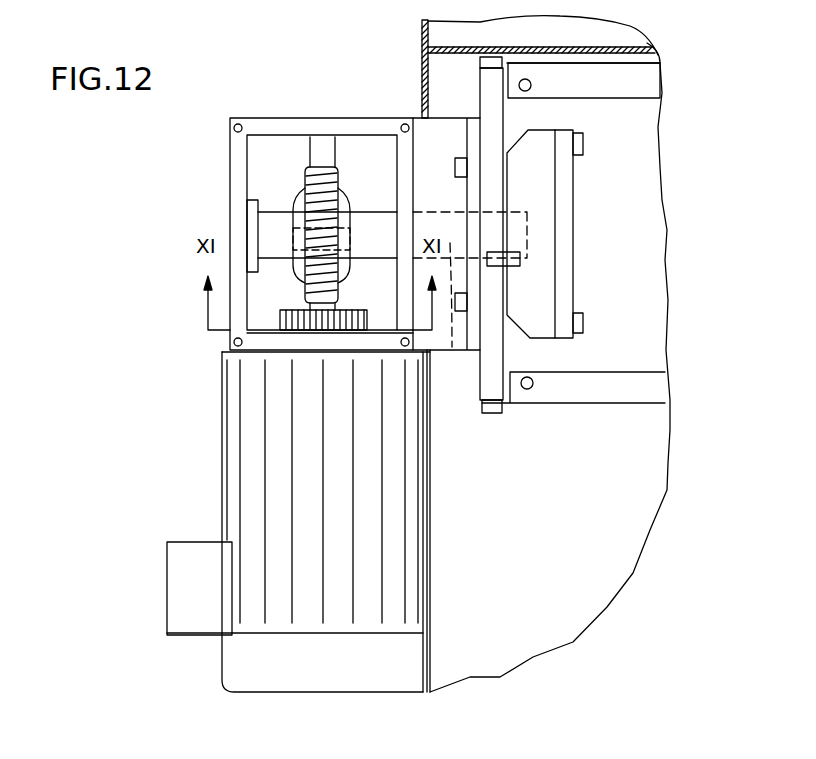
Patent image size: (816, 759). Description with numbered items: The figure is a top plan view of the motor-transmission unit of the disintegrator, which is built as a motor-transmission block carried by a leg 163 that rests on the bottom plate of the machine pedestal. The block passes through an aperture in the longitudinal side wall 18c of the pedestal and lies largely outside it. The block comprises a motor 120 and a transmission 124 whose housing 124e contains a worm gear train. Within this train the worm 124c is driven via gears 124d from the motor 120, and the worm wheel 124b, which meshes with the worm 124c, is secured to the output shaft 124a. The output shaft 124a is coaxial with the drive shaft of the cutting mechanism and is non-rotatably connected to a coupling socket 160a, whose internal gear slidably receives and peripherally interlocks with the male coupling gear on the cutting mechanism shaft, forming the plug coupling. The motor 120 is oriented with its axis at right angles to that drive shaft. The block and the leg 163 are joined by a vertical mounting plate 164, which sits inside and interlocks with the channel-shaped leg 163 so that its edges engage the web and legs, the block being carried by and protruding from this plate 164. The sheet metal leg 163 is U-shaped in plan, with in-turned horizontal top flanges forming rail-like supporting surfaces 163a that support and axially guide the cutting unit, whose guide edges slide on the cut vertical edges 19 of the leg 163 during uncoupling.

The transmission 124 is at (278, 112).
The output shaft 124a is at (380, 240).
The worm wheel 124b is at (307, 177).
The worm 124c is at (307, 210).
The gears 124d is at (317, 333).
The housing 124e is at (440, 138).
The longitudinal side wall 18c is at (422, 33).
The cut vertical edges 19 is at (627, 98).
The coupling socket 160a is at (543, 185).
The leg 163 is at (640, 410).
The supporting surfaces 163a is at (585, 392).
The mounting plate 164 is at (495, 377).
The motor 120 is at (183, 600).